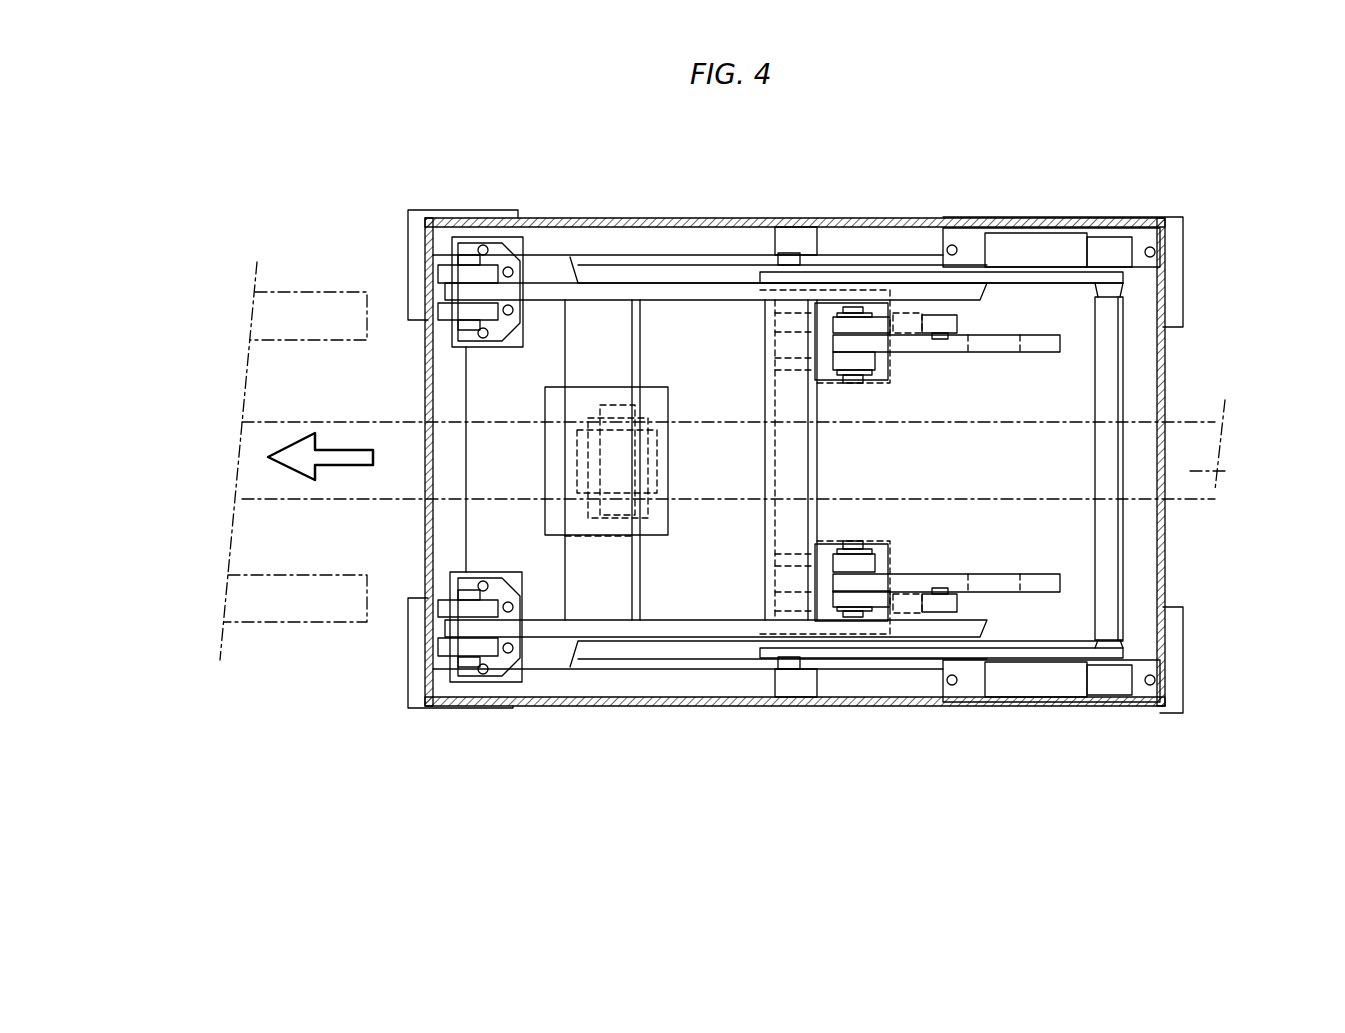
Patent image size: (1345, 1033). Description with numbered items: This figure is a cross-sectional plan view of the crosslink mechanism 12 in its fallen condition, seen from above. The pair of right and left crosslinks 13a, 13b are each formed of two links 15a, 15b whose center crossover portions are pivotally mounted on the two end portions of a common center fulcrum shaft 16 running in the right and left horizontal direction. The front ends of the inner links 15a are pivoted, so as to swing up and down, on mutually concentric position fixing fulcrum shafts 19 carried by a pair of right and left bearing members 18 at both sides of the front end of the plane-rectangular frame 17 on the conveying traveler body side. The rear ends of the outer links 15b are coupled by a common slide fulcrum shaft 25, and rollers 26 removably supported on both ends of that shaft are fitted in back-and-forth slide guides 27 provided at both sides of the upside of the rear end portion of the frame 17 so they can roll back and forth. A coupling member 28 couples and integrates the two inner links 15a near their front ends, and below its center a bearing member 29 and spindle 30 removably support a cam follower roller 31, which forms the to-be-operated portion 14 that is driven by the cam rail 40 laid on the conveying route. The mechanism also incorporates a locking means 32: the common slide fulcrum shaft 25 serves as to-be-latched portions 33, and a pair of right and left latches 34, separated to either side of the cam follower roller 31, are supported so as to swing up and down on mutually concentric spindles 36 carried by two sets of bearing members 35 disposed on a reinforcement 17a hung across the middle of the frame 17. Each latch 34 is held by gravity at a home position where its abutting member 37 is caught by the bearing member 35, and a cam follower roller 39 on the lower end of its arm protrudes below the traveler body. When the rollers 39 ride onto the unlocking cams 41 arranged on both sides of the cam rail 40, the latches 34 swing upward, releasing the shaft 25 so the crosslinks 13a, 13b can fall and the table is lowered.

The crosslink mechanism 12 is at (792, 684).
The crosslink 13a is at (620, 703).
The crosslink 13b is at (735, 262).
The to-be-operated portion 14 is at (712, 465).
The link 15a is at (665, 290).
The link 15b is at (1012, 275).
The center fulcrum shaft 16 is at (797, 442).
The plane-rectangular frame 17 is at (817, 240).
The reinforcement 17a is at (818, 472).
The bearing member 18 is at (487, 270).
The position fixing fulcrum shaft 19 is at (466, 245).
The common slide fulcrum shaft 25 is at (1093, 458).
The roller 26 is at (1105, 245).
The back-and-forth slide guide 27 is at (1060, 250).
The coupling member 28 is at (605, 590).
The bearing member 29 is at (660, 392).
The spindle 30 is at (618, 392).
The cam follower roller 31 is at (660, 465).
The locking means 32 is at (1070, 349).
The to-be-latched portion 33 is at (1105, 365).
The latch 34 is at (996, 345).
The bearing member 35 is at (860, 315).
The spindle 36 is at (855, 385).
The abutting member 37 is at (906, 322).
The cam follower roller 39 is at (940, 335).
The cam rail 40 is at (270, 432).
The unlocking cam 41 is at (317, 316).